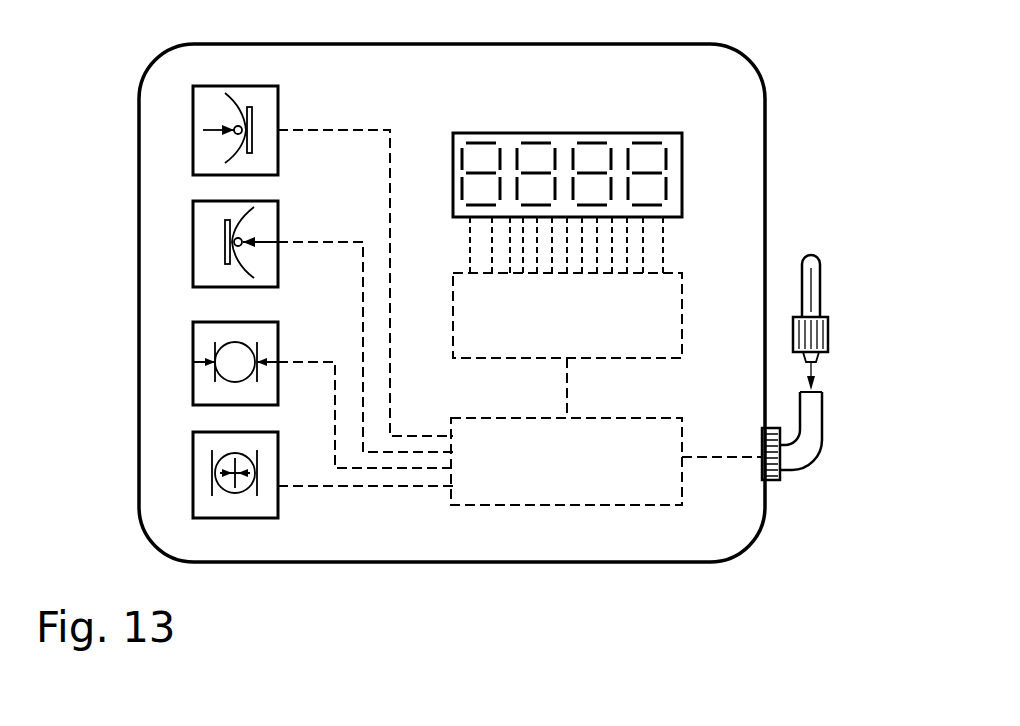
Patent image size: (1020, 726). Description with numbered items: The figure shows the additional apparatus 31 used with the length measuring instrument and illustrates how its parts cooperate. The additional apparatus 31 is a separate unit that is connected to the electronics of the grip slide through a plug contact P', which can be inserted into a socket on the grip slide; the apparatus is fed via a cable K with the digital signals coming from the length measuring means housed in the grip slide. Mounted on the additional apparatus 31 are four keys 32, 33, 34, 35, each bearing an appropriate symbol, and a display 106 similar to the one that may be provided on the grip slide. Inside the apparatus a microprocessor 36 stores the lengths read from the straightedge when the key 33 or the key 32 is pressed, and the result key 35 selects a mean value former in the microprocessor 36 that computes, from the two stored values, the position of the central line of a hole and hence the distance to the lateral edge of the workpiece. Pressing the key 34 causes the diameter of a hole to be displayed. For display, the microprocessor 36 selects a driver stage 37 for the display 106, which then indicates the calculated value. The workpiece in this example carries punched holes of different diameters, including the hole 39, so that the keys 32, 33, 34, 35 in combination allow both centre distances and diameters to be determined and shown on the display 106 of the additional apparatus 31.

The additional apparatus 31 is at (764, 78).
The key 32 is at (193, 130).
The key 33 is at (193, 242).
The key 34 is at (193, 345).
The result key 35 is at (193, 478).
The microprocessor 36 is at (612, 505).
The driver stage 37 is at (682, 280).
The punched hole 39 is at (409, 8).
The display 106 is at (613, 133).
The plug contact P' is at (840, 318).
The cable K is at (822, 410).